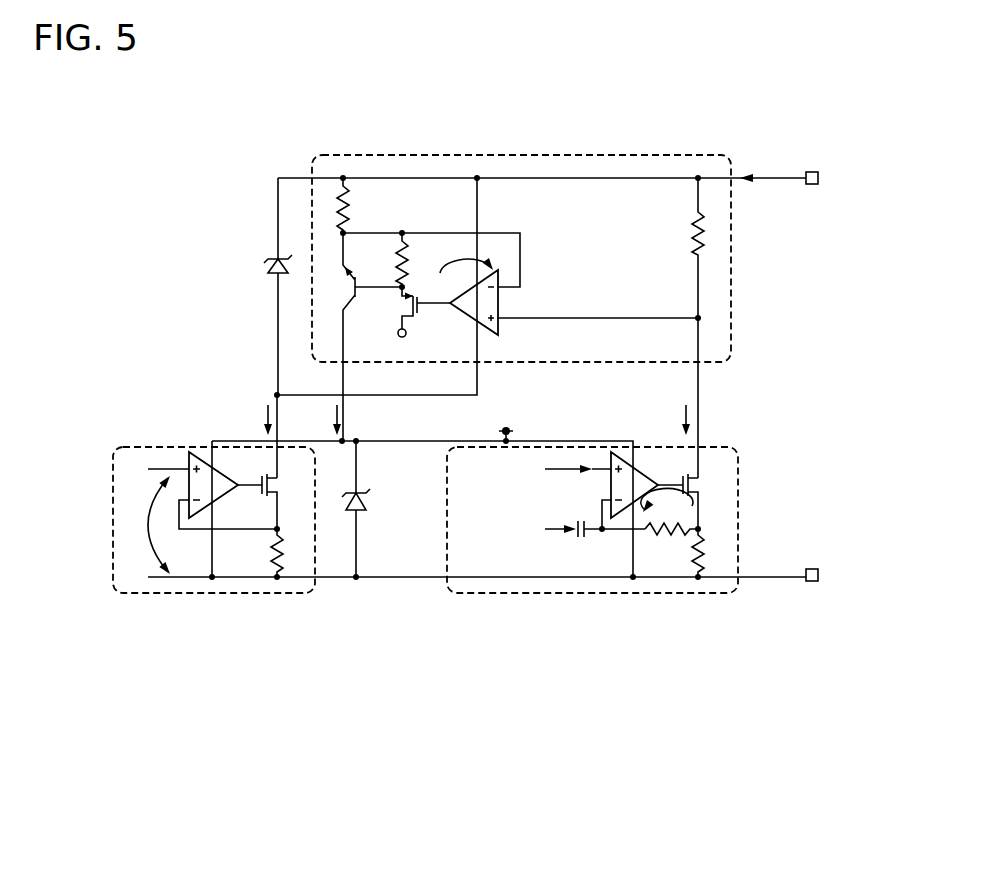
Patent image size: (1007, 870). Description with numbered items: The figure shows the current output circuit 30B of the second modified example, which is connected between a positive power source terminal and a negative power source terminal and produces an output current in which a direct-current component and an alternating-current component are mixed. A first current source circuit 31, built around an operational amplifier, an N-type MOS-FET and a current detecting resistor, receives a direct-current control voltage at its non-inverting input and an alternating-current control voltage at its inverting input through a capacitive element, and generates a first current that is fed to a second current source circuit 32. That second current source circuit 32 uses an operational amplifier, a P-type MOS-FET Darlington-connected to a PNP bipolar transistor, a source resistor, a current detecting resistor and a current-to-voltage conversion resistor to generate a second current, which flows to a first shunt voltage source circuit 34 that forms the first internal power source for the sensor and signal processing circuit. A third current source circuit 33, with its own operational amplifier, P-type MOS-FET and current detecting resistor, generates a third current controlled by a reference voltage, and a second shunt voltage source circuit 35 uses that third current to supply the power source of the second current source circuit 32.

The current output circuit 30B is at (195, 675).
The first current source circuit 31 is at (714, 446).
The second current source circuit 32 is at (652, 155).
The third current source circuit 33 is at (238, 594).
The first shunt voltage source circuit 34 is at (363, 493).
The second shunt voltage source circuit 35 is at (273, 256).